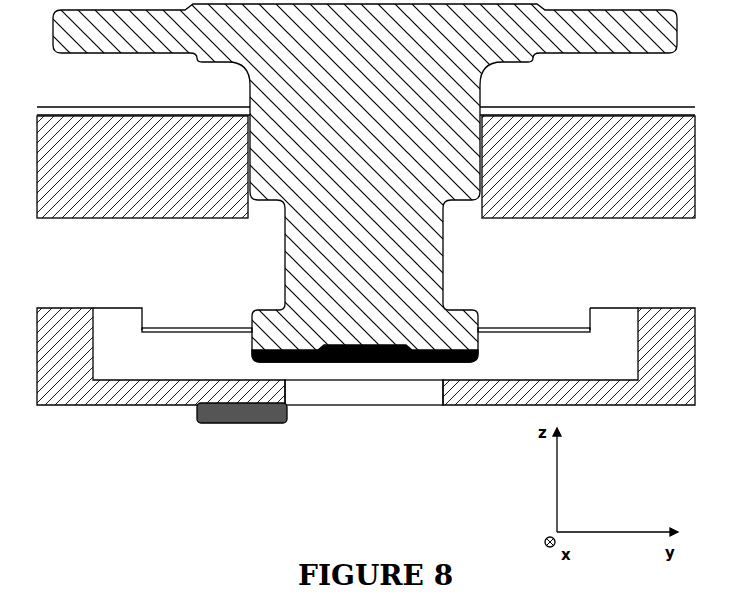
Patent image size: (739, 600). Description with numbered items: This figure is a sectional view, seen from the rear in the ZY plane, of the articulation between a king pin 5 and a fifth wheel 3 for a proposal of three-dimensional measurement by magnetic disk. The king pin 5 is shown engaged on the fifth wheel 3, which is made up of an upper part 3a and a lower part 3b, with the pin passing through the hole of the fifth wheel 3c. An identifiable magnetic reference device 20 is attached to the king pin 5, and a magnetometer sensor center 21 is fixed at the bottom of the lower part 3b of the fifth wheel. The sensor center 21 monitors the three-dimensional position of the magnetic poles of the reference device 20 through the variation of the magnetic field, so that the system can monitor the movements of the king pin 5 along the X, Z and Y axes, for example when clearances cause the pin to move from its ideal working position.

The king pin 5 is at (365, 183).
The fifth wheel 3 is at (366, 167).
The upper part of the fifth wheel 3a is at (366, 93).
The lower part of the fifth wheel 3b is at (98, 417).
The hole of the fifth wheel 3c is at (418, 408).
The identifiable magnetic reference device 20 is at (340, 368).
The magnetometer sensor center 21 is at (232, 427).